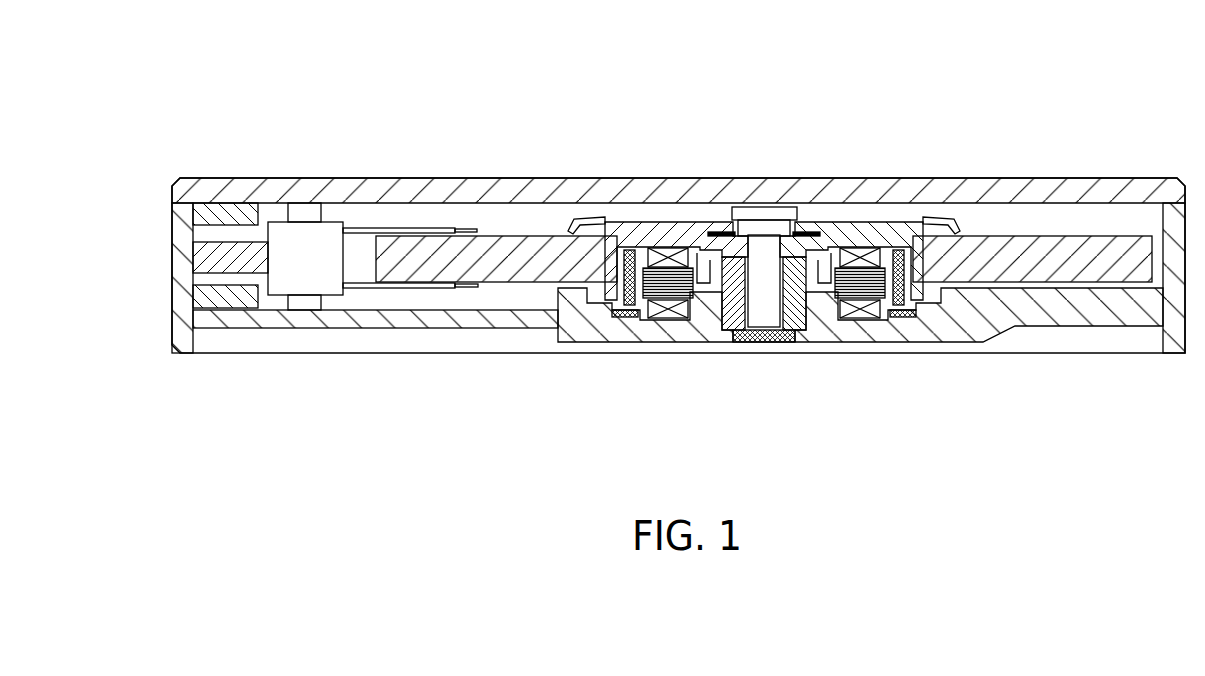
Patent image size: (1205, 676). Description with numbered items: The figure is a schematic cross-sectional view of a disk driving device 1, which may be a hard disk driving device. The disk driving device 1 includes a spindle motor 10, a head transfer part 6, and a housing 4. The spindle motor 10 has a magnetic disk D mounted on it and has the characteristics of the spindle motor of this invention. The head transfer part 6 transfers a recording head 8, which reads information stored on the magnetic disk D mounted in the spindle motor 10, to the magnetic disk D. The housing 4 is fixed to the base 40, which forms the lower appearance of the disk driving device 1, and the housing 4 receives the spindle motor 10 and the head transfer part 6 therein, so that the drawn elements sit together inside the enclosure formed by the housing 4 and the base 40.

The disk driving device 1 is at (194, 73).
The housing 4 is at (983, 187).
The head transfer part 6 is at (312, 295).
The recording head 8 is at (477, 290).
The spindle motor 10 is at (833, 222).
The base 40 is at (1073, 317).
The magnetic disk D is at (1108, 245).